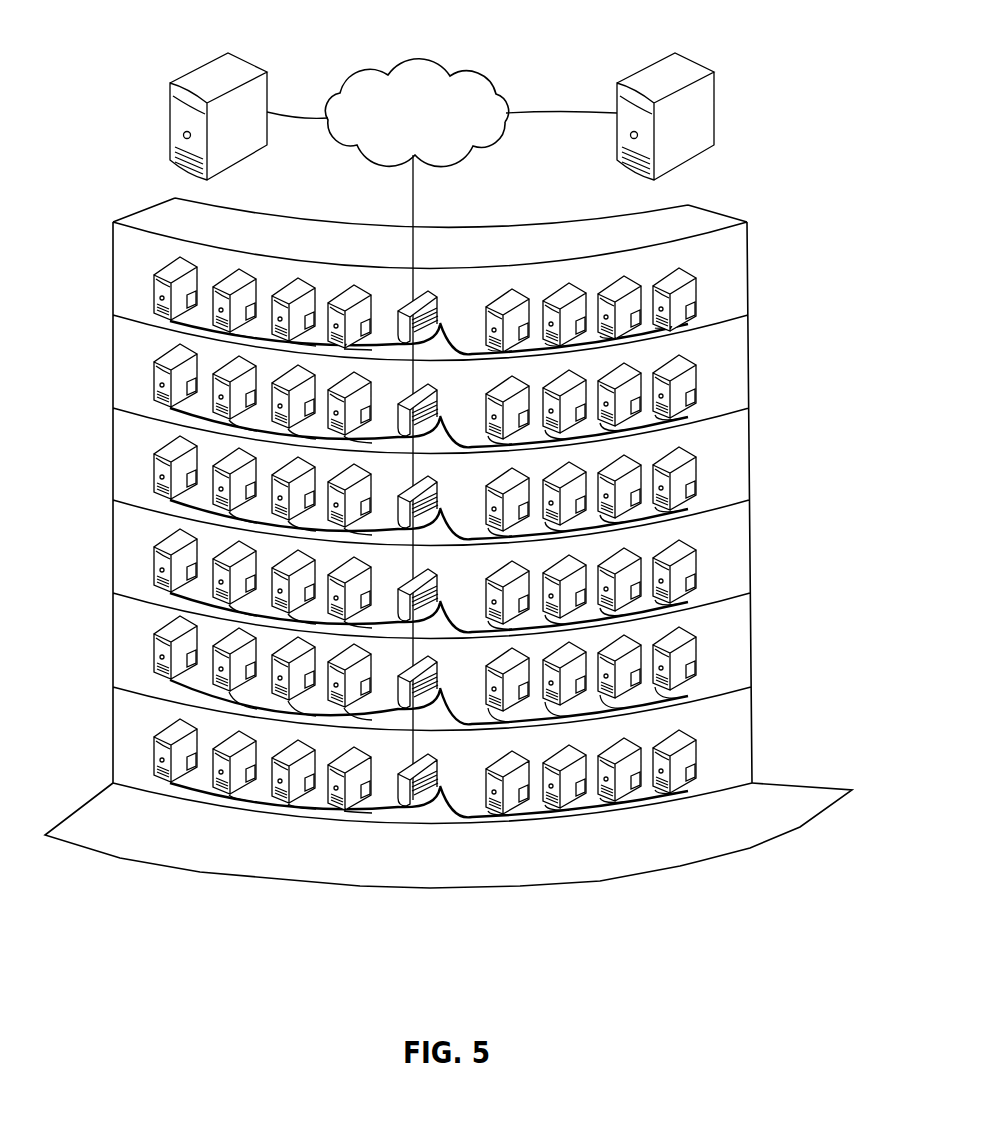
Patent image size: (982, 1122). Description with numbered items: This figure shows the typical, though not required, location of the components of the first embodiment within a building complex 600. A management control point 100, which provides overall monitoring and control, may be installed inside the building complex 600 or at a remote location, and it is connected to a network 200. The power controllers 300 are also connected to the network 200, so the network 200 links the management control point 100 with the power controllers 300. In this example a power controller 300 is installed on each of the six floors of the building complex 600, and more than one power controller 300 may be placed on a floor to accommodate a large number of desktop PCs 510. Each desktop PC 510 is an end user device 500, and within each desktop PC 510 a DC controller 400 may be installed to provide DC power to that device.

The management control point 100 is at (636, 72).
The network 200 is at (416, 113).
The power controller 300 is at (412, 806).
The DC controller 400 is at (688, 779).
The end user device 500 is at (604, 856).
The desktop PC 510 is at (501, 813).
The building complex 600 is at (113, 846).